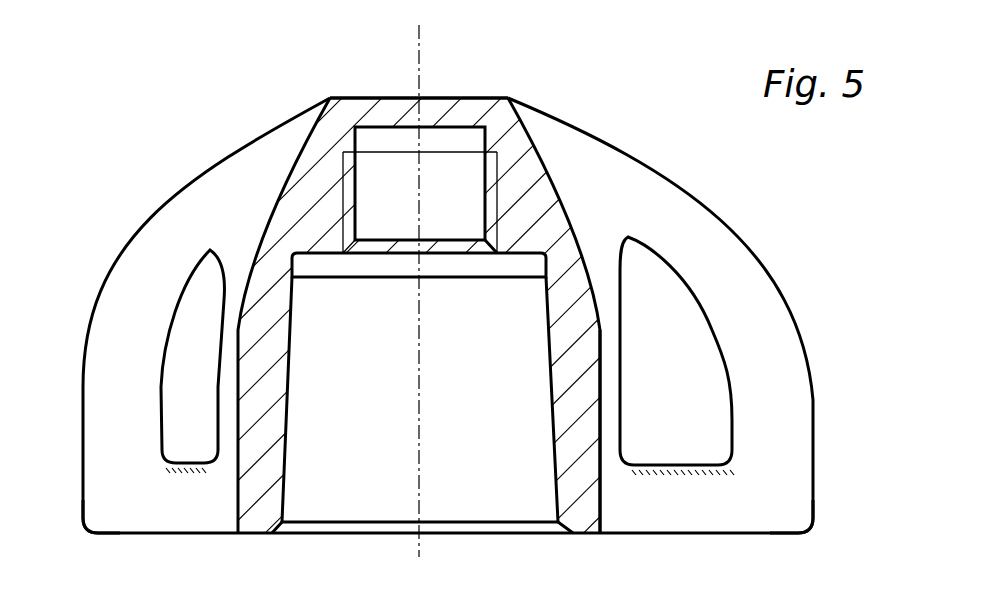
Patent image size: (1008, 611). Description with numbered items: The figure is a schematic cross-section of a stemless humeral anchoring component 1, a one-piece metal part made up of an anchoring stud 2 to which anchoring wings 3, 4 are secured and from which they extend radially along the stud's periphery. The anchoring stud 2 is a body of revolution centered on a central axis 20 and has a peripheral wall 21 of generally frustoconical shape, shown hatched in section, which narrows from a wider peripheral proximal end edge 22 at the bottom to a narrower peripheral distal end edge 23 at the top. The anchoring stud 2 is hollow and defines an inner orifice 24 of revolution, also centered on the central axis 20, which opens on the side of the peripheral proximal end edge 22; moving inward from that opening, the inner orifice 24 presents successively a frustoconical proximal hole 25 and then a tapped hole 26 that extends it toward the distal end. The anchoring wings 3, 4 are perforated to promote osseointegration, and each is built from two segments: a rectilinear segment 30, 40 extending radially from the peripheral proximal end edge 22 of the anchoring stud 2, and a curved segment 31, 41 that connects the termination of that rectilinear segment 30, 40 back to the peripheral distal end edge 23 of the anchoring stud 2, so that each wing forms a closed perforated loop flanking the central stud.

The stemless humeral anchoring component 1 is at (731, 152).
The anchoring stud 2 is at (553, 160).
The anchoring wing 3 is at (811, 353).
The anchoring wing 4 is at (137, 215).
The central axis 20 is at (420, 50).
The peripheral wall 21 is at (590, 493).
The peripheral proximal end edge 22 is at (602, 537).
The peripheral distal end edge 23 is at (510, 98).
The inner orifice 24 is at (398, 505).
The frustoconical proximal hole 25 is at (328, 500).
The tapped hole 26 is at (379, 173).
The rectilinear segment 30 is at (743, 513).
The curved segment 31 is at (767, 317).
The rectilinear segment 40 is at (133, 515).
The curved segment 41 is at (120, 291).